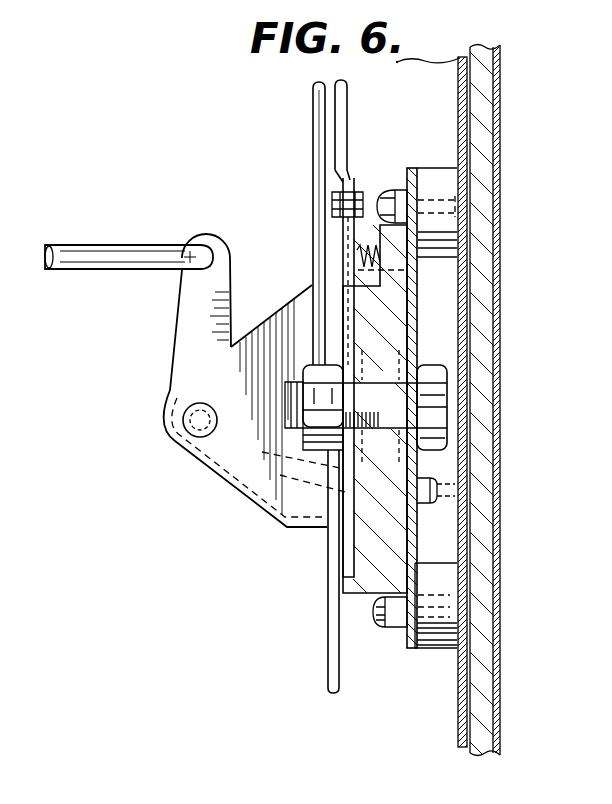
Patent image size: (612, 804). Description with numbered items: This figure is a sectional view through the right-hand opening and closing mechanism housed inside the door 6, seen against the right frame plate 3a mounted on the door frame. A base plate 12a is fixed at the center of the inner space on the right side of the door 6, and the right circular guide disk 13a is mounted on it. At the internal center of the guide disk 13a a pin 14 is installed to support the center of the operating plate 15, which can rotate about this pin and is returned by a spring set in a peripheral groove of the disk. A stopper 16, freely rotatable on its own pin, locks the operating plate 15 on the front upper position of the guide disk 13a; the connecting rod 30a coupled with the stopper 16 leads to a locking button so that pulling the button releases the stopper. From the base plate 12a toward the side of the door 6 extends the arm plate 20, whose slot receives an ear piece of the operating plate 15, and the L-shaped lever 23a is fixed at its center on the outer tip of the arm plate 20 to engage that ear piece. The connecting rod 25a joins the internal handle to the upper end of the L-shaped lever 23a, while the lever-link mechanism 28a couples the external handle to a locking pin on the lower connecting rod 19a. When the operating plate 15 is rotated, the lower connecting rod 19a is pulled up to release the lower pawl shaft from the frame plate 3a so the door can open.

The right frame plate 3a is at (480, 575).
The door 6 is at (455, 747).
The base plate 12a is at (420, 648).
The right circular guide disk 13a is at (363, 580).
The pin 14 is at (393, 388).
The operating plate 15 is at (350, 462).
The stopper 16 is at (350, 180).
The lower connecting rod 19a is at (332, 640).
The arm plate 20 is at (240, 493).
The L-shaped lever 23a is at (218, 273).
The connecting rod 25a is at (113, 252).
The lever-link mechanism 28a is at (313, 96).
The connecting rod 30a is at (347, 100).